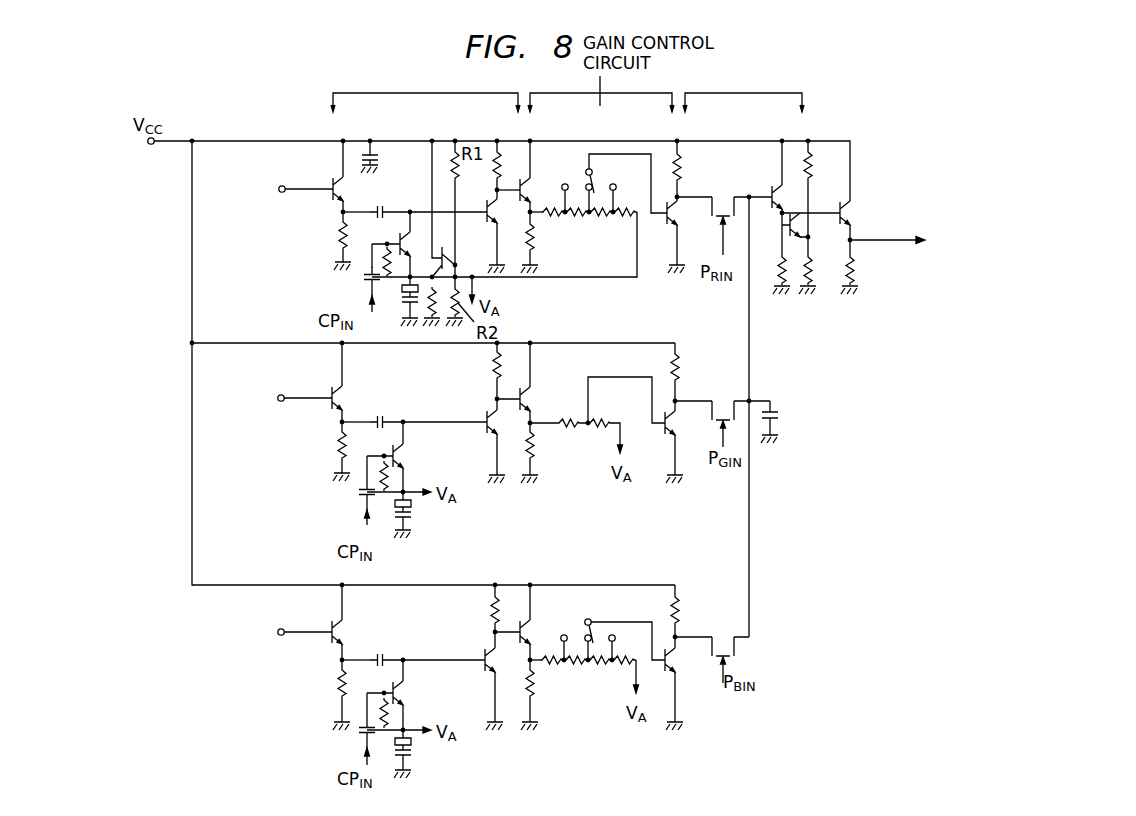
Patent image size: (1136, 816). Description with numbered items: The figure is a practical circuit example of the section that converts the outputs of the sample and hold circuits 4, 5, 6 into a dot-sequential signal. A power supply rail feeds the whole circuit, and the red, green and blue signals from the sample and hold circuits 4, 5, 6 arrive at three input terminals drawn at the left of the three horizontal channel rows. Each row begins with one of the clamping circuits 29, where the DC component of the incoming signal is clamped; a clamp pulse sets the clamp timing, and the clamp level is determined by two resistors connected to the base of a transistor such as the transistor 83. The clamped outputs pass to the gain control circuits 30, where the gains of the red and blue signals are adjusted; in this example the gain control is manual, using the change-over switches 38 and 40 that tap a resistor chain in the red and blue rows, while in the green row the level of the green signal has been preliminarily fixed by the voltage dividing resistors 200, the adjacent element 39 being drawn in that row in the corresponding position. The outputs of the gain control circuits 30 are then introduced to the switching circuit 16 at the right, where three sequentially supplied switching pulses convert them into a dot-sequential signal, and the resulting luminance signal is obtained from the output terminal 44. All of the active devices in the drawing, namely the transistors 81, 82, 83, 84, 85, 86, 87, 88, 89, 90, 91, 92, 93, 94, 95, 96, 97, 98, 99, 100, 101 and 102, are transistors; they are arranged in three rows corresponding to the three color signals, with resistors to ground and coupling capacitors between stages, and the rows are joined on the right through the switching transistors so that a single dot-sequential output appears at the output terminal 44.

The sample and hold circuit 4 is at (282, 196).
The sample and hold circuit 5 is at (281, 405).
The sample and hold circuit 6 is at (281, 639).
The switching circuit 16 is at (759, 97).
The clamping circuits 29 is at (470, 97).
The gain control circuits 30 is at (631, 97).
The change-over switch 38 is at (601, 184).
The gain selecting switch (green channel) 39 is at (591, 413).
The change-over switch 40 is at (572, 626).
The output terminal 44 is at (876, 248).
The transistor 81 is at (326, 181).
The transistor 82 is at (404, 230).
The transistor 83 is at (446, 258).
The transistor 84 is at (481, 205).
The transistor 85 is at (534, 187).
The transistor 86 is at (683, 222).
The transistor 87 is at (724, 194).
The transistor 88 is at (770, 186).
The transistor 89 is at (794, 222).
The transistor 90 is at (853, 215).
The transistor 91 is at (346, 398).
The transistor 92 is at (406, 457).
The transistor 93 is at (482, 419).
The transistor 94 is at (534, 401).
The transistor 95 is at (680, 431).
The transistor 96 is at (718, 396).
The transistor 97 is at (346, 632).
The transistor 98 is at (406, 695).
The transistor 99 is at (480, 656).
The transistor 100 is at (535, 628).
The transistor 101 is at (680, 672).
The transistor 102 is at (716, 633).
The voltage dividing resistors 200 is at (567, 432).